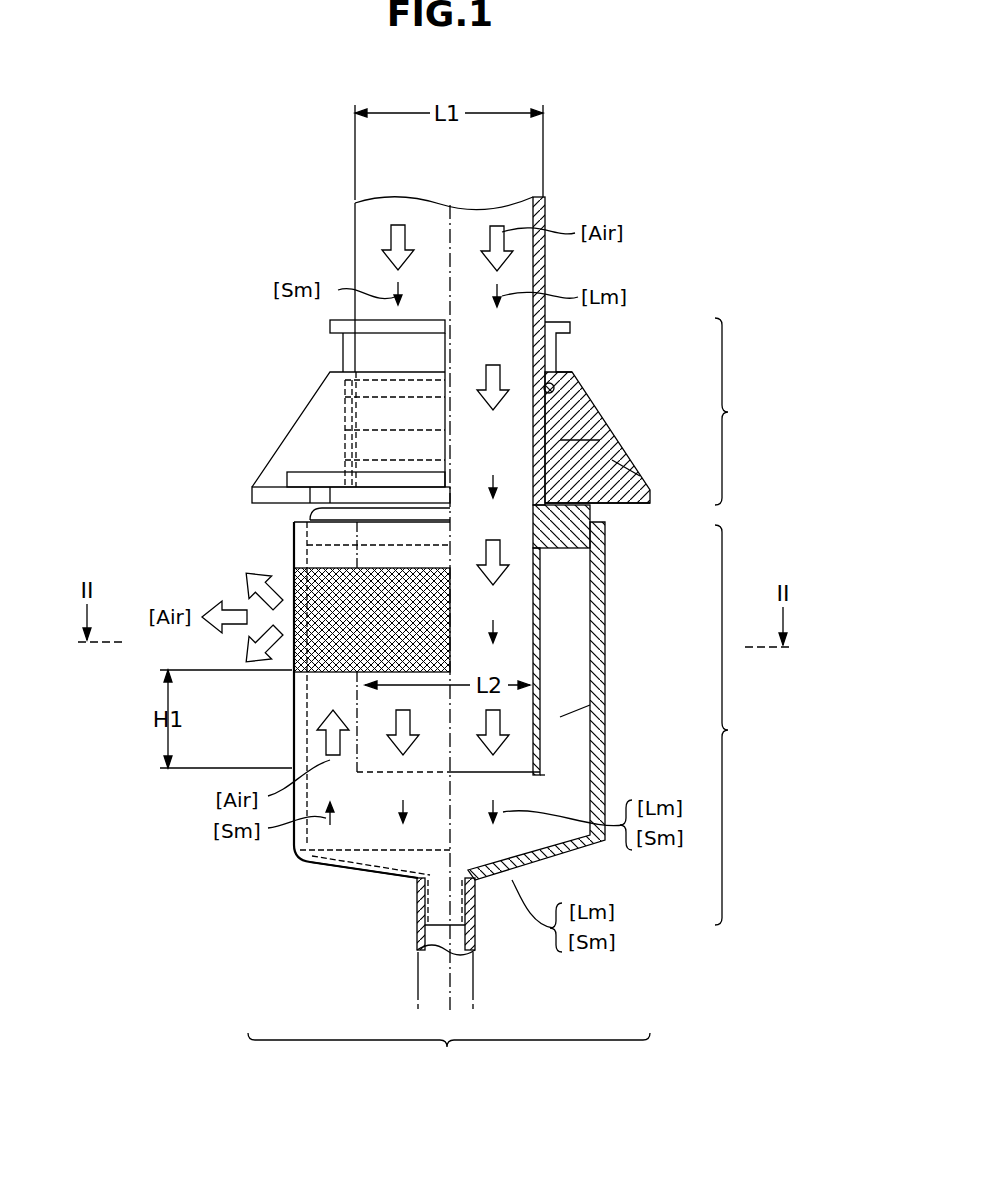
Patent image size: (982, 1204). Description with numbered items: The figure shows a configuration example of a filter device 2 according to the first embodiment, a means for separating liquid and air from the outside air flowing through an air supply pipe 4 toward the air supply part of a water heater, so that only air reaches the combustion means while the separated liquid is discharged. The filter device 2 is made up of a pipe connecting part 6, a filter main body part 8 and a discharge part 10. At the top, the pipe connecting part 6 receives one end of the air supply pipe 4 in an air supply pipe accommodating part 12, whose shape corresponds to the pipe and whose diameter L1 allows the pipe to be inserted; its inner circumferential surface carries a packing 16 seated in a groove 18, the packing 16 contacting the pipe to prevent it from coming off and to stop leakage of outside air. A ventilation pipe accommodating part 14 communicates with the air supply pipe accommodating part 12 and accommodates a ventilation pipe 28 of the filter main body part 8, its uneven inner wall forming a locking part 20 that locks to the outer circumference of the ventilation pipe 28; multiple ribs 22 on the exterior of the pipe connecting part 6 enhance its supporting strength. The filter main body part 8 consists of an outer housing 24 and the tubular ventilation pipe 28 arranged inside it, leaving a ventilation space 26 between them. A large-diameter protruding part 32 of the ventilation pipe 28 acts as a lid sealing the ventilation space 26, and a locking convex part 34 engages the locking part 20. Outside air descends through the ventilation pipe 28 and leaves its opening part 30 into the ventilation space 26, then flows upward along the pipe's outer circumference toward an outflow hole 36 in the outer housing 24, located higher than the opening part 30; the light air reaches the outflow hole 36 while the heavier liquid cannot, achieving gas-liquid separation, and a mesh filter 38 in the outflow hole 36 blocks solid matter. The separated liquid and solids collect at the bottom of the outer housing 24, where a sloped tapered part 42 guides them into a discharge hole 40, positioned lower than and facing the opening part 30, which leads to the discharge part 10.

The filter device 2 is at (449, 1055).
The air supply pipe 4 is at (355, 216).
The pipe connecting part 6 is at (732, 411).
The filter main body part 8 is at (732, 725).
The discharge part 10 is at (417, 985).
The air supply pipe accommodating part 12 is at (562, 330).
The ventilation pipe accommodating part 14 is at (592, 440).
The packing 16 is at (611, 431).
The groove 18 is at (570, 385).
The locking part 20 is at (622, 490).
The ribs 22 is at (628, 464).
The outer housing 24 is at (600, 620).
The ventilation space 26 is at (578, 712).
The ventilation pipe 28 is at (538, 580).
The opening part 30 is at (542, 778).
The protruding part 32 is at (565, 530).
The locking convex part 34 is at (570, 412).
The outflow hole 36 is at (333, 657).
The filter 38 is at (318, 678).
The discharge hole 40 is at (468, 898).
The tapered part 42 is at (362, 866).